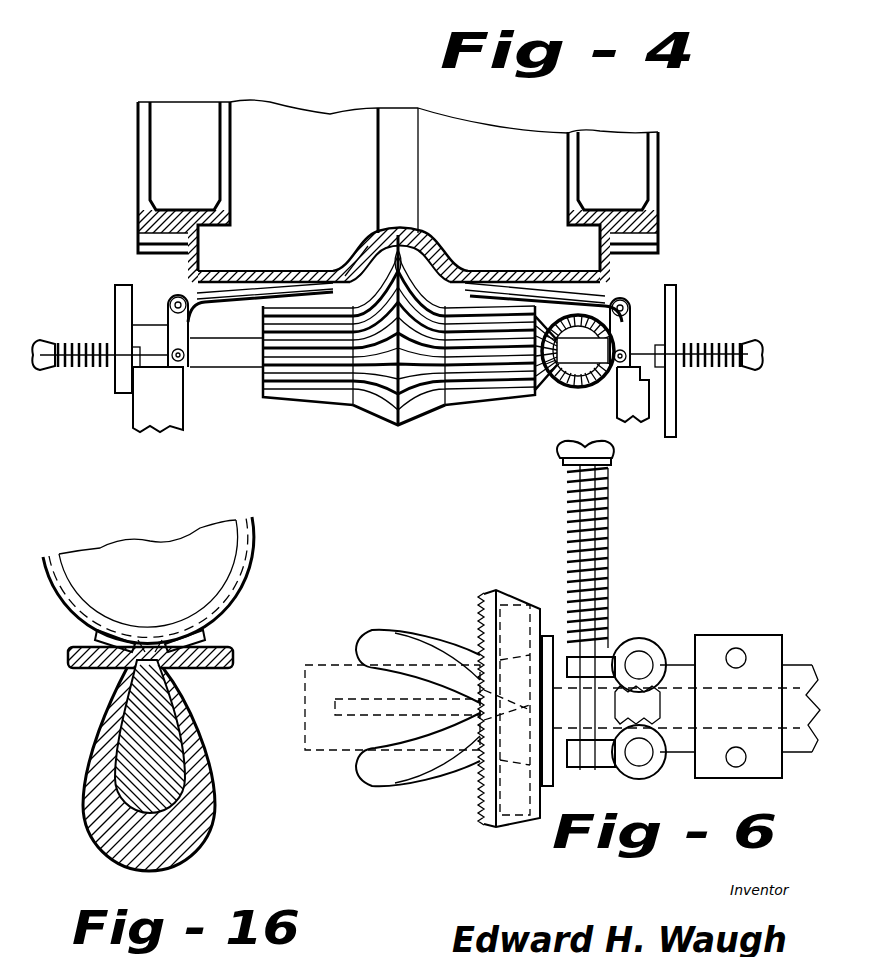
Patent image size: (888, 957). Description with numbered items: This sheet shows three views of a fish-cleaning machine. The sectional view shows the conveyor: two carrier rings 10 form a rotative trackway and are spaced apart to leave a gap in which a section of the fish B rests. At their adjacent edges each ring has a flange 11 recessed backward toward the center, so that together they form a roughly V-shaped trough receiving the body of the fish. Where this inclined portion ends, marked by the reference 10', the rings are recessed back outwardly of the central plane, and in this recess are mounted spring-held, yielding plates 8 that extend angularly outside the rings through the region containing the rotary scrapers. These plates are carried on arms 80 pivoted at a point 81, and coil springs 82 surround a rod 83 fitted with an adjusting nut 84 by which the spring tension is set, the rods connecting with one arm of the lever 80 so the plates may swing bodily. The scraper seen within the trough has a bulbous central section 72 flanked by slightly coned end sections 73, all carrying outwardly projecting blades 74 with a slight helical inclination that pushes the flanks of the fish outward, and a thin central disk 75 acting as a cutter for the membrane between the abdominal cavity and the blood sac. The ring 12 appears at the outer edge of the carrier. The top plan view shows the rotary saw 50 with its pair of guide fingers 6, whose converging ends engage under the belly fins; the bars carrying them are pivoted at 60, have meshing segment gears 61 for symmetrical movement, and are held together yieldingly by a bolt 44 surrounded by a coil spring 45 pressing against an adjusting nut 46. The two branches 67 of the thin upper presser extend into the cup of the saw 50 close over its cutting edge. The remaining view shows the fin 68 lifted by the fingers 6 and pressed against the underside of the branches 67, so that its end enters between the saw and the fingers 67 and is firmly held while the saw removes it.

In FIG. 4, the spring-held yielding plate 8 is at (270, 285).
In FIG. 4, the carrier ring 10 is at (398, 255).
In FIG. 4, the recess point of the carrier ring 10' is at (343, 244).
In FIG. 4, the flange 11 is at (432, 262).
In FIG. 4, the section of the fish B is at (408, 240).
In FIG. 4, the ring 12 is at (138, 247).
In FIG. 4, the central section of the scraper 72 is at (415, 415).
In FIG. 4, the end section of the scraper 73 is at (295, 400).
In FIG. 4, the blade 74 is at (342, 400).
In FIG. 4, the thin disk 75 is at (396, 425).
In FIG. 4, the arm 80 is at (405, 314).
In FIG. 4, the pivot point 81 is at (176, 298).
In FIG. 4, the spring 82 is at (82, 343).
In FIG. 4, the rod 83 is at (82, 365).
In FIG. 4, the adjusting nut 84 is at (42, 370).
In FIG. 6, the bolt 44 is at (600, 508).
In FIG. 6, the coil spring 45 is at (606, 542).
In FIG. 6, the adjusting nut 46 is at (612, 455).
In FIG. 6, the saw 50 is at (510, 602).
In FIG. 16, the saw 50 is at (247, 578).
In FIG. 6, the guide finger 6 is at (386, 640).
In FIG. 16, the guide finger 6 is at (212, 662).
In FIG. 6, the branch of the presser 67 is at (363, 706).
In FIG. 16, the branch of the presser 67 is at (115, 632).
In FIG. 16, the fin 68 is at (132, 640).
In FIG. 6, the pivot 60 is at (640, 660).
In FIG. 6, the segment gear 61 is at (660, 705).